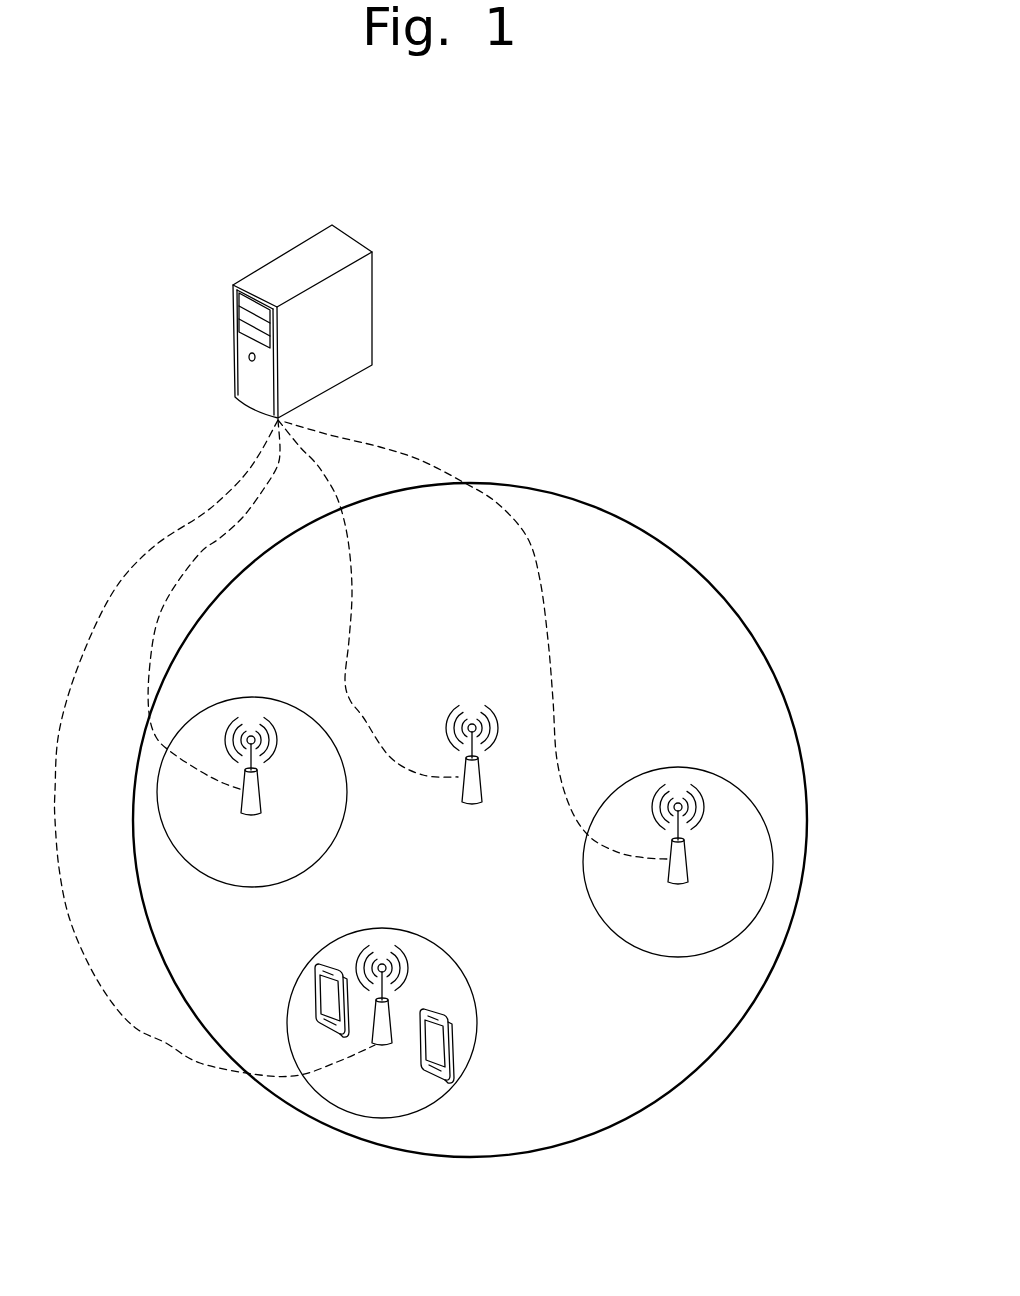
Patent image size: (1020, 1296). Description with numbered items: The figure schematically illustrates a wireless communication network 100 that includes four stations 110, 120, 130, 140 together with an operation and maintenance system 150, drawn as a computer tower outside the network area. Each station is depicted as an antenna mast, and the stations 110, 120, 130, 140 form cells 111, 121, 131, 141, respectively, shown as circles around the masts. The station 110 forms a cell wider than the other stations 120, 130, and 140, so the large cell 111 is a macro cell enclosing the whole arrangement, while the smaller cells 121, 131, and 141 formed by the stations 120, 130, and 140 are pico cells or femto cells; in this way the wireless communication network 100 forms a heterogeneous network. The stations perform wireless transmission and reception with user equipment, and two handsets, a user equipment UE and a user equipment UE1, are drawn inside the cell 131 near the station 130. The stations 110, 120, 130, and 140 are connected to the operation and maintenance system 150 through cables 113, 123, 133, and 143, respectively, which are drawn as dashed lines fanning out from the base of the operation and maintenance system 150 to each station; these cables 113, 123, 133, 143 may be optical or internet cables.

The wireless communication network 100 is at (653, 216).
The station 110 is at (481, 777).
The cell 111 is at (572, 496).
The cable 113 is at (318, 464).
The station 120 is at (260, 790).
The cell 121 is at (252, 697).
The cable 123 is at (199, 557).
The station 130 is at (387, 1041).
The cell 131 is at (378, 928).
The cable 133 is at (124, 567).
The station 140 is at (683, 858).
The cell 141 is at (692, 767).
The cable 143 is at (376, 446).
The operation and maintenance system 150 is at (358, 324).
The user equipment UE is at (335, 963).
The user equipment UE1 is at (442, 1008).